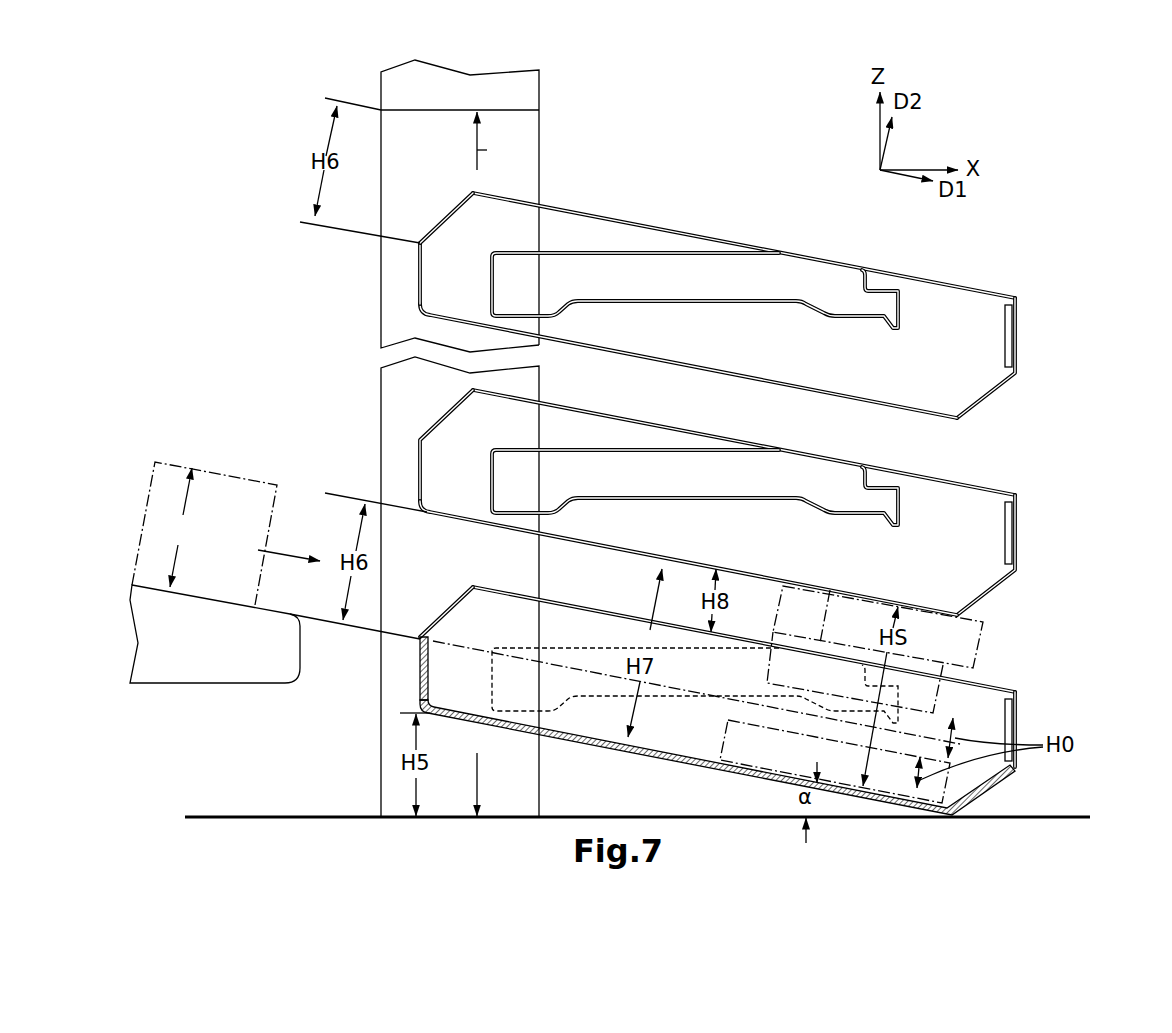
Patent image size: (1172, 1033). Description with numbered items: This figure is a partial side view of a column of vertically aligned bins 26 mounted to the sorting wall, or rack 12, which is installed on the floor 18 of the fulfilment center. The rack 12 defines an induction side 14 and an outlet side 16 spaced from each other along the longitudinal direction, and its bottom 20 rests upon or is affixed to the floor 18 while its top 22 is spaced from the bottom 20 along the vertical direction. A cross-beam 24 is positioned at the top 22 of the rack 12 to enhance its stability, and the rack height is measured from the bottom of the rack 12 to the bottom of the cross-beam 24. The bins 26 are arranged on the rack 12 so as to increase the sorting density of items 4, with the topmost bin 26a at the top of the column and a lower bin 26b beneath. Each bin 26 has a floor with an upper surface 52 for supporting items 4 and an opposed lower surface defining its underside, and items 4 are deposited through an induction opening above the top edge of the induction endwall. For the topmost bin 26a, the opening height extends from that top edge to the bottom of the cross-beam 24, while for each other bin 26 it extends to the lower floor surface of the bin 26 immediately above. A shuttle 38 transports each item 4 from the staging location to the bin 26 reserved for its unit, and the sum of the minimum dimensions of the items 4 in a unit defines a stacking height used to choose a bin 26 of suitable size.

The items 4 is at (274, 540).
The sorting wall 12 is at (470, 438).
The induction side 14 is at (381, 317).
The outlet side 16 is at (539, 195).
The floor 18 is at (287, 814).
The bottom 20 is at (507, 812).
The top 22 is at (527, 112).
The cross-beam 24 is at (527, 93).
The bin 26 is at (741, 502).
The topmost bin 26a is at (703, 276).
The bin 26b is at (710, 694).
The shuttle 38 is at (215, 634).
The upper surface 52 is at (567, 728).